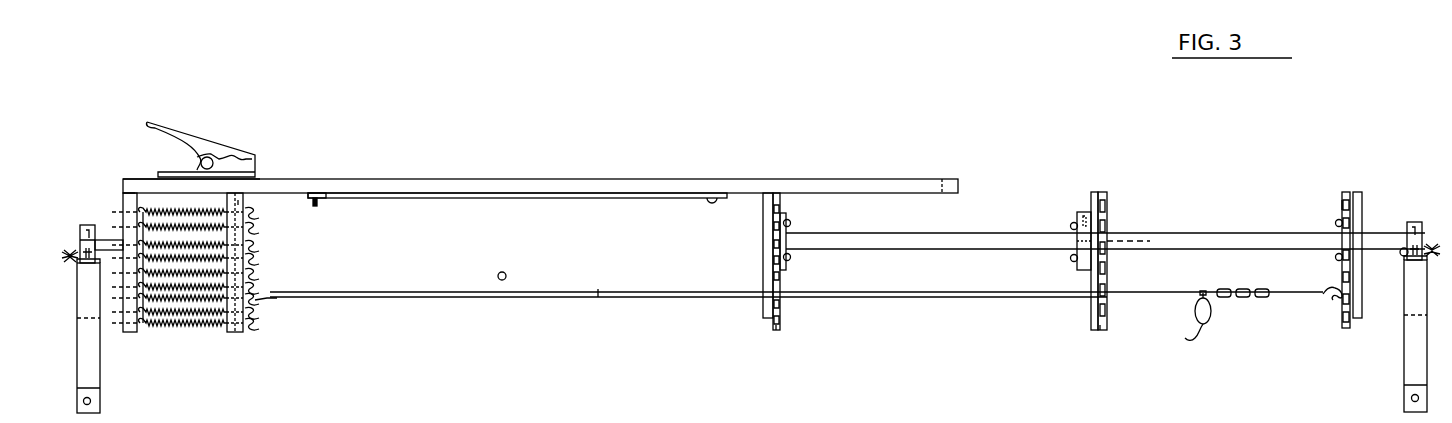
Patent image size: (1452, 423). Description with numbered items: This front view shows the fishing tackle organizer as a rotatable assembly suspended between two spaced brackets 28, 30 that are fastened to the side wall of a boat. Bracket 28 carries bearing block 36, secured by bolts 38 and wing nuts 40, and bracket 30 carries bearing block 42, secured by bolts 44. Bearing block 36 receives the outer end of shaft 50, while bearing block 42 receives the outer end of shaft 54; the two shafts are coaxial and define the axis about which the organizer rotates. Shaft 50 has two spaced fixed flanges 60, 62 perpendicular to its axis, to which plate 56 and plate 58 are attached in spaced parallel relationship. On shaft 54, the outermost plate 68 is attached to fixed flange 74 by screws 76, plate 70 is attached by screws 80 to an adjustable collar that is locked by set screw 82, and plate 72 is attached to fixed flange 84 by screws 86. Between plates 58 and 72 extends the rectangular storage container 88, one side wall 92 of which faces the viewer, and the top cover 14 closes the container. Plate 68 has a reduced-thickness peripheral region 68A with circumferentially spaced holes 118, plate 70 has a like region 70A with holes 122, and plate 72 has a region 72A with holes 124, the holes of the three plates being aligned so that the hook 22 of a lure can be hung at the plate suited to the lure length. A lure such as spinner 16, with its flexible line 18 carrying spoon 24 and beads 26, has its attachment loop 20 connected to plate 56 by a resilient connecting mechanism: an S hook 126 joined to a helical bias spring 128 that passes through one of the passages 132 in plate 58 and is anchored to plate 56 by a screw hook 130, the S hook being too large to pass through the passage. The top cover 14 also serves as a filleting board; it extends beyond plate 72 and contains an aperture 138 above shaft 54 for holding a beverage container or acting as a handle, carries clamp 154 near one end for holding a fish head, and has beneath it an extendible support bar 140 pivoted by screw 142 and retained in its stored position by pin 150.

The top cover 14 is at (614, 160).
The spinner 16 is at (976, 298).
The flexible line 18 is at (446, 303).
The attachment loop 20 is at (297, 303).
The hook 22 is at (1322, 289).
The spoon 24 is at (1183, 317).
The beads 26 is at (1224, 300).
The bracket 28 is at (100, 384).
The bracket 30 is at (1399, 382).
The bearing block 36 is at (87, 223).
The bolts 38 is at (110, 332).
The wing nuts 40 is at (59, 252).
The bearing block 42 is at (1402, 220).
The bolts 44 is at (1404, 256).
The shaft 50 is at (106, 238).
The shaft 54 is at (1170, 227).
The plate 56 is at (120, 187).
The plate 58 is at (263, 215).
The fixed flange 60 is at (157, 192).
The fixed flange 62 is at (218, 204).
The outermost plate 68 is at (1352, 322).
The peripheral region 68A is at (1348, 189).
The plate 70 is at (1087, 325).
The peripheral region 70A is at (1098, 332).
The plate 72 is at (759, 322).
The peripheral region 72A is at (775, 330).
The fixed flange 74 is at (1342, 202).
The screws 76 is at (1334, 222).
The screws 80 is at (1070, 226).
The set screw 82 is at (1083, 207).
The fixed flange 84 is at (786, 268).
The screws 86 is at (792, 223).
The rectangular storage container 88 is at (599, 291).
The side wall 92 is at (492, 259).
The holes 118 is at (1340, 319).
The holes 122 is at (1104, 310).
The holes 124 is at (782, 306).
The S hook 126 is at (266, 311).
The helical bias spring 128 is at (180, 326).
The screw hook 130 is at (144, 336).
The passages 132 is at (236, 332).
The aperture 138 is at (921, 174).
The extendible support bar 140 is at (504, 198).
The screw 142 is at (703, 207).
The pin 150 is at (322, 201).
The clamp 154 is at (233, 143).